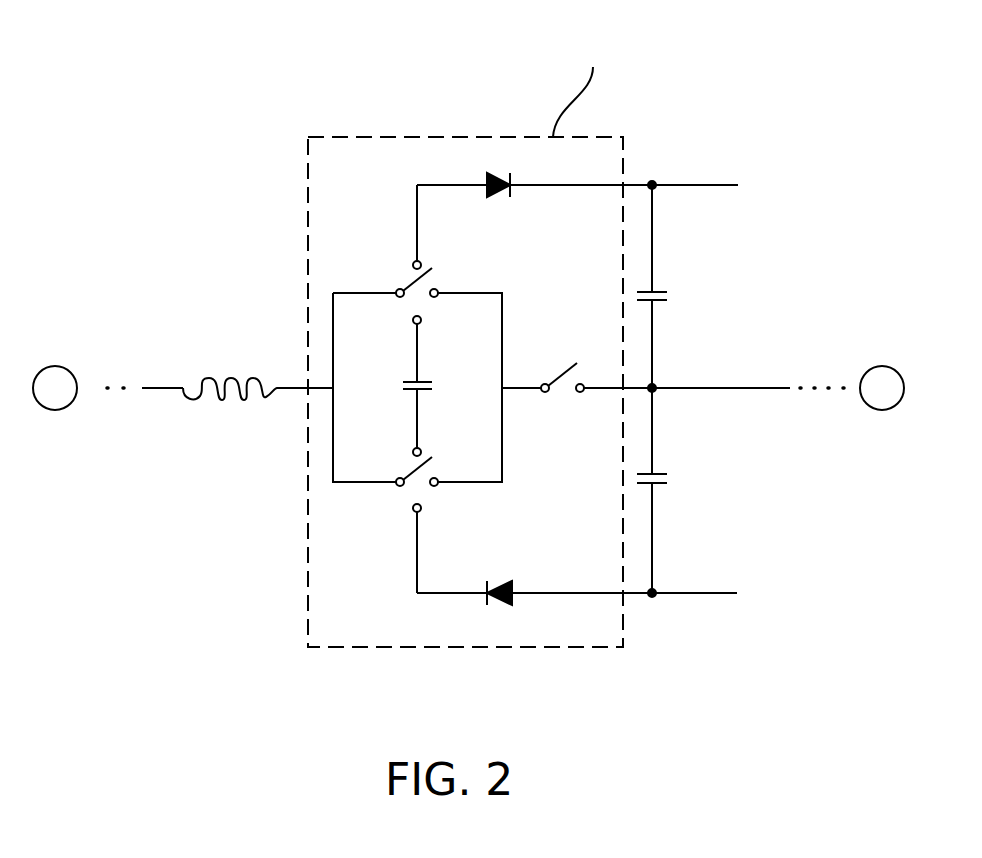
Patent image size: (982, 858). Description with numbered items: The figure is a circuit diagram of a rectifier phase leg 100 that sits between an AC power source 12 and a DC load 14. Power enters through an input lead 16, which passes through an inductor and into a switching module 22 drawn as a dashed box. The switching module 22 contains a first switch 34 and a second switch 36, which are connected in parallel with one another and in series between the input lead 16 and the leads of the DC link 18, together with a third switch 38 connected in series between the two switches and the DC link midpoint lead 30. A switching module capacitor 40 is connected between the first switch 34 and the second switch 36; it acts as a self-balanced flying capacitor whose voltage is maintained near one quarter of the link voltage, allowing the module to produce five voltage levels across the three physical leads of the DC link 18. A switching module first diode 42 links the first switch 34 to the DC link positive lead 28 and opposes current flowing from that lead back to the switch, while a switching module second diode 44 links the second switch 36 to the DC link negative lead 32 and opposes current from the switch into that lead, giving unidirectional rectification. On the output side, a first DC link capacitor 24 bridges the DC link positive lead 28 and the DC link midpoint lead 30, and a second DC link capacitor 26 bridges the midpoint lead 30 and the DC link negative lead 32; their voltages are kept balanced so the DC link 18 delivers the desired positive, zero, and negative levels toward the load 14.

The power source 12 is at (55, 388).
The load 14 is at (882, 388).
The input lead 16 is at (296, 388).
The DC link 18 is at (760, 388).
The switching module 22 is at (597, 172).
The first DC link capacitor 24 is at (670, 278).
The second DC link capacitor 26 is at (670, 462).
The DC link positive lead 28 is at (688, 185).
The DC link midpoint lead 30 is at (676, 388).
The DC link negative lead 32 is at (677, 593).
The first switch 34 is at (439, 274).
The second switch 36 is at (397, 503).
The third switch 38 is at (564, 398).
The switching module capacitor 40 is at (396, 387).
The switching module first diode 42 is at (497, 190).
The switching module second diode 44 is at (500, 598).
The phase leg 100 is at (296, 678).